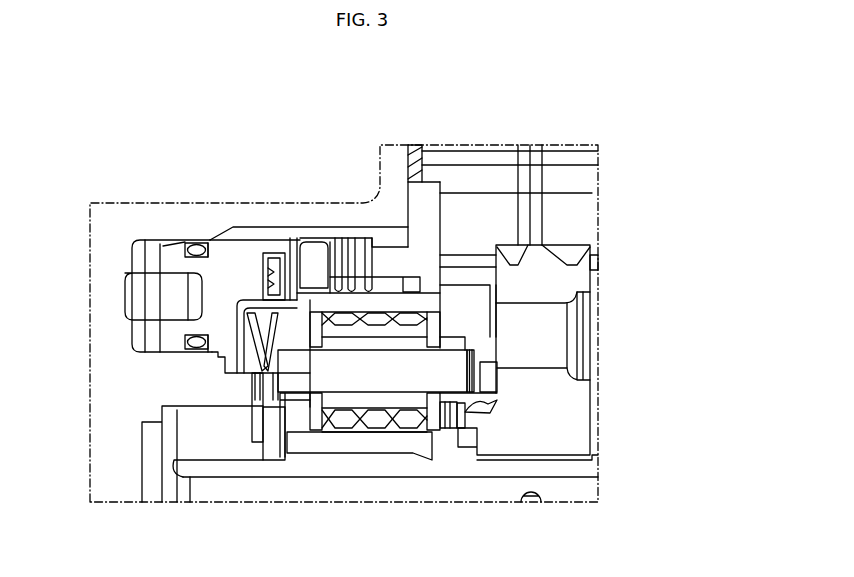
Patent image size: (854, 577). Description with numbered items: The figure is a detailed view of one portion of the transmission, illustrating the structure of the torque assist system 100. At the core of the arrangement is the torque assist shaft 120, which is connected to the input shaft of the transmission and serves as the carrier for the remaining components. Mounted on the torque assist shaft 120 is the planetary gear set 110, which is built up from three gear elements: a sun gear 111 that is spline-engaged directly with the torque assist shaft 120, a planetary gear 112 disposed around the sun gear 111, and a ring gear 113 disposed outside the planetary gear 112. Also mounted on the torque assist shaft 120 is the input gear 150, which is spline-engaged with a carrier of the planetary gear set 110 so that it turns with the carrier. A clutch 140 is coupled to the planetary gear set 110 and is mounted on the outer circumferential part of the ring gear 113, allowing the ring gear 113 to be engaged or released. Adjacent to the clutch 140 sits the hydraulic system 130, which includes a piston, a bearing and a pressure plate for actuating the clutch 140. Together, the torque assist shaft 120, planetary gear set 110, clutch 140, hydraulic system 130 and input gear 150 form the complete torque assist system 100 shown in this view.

The torque assist system 100 is at (350, 148).
The planetary gear set 110 is at (320, 220).
The sun gear 111 is at (395, 443).
The planetary gear 112 is at (342, 377).
The ring gear 113 is at (333, 302).
The torque assist shaft 120 is at (467, 490).
The hydraulic system 130 is at (172, 230).
The clutch 140 is at (390, 220).
The input gear 150 is at (585, 274).